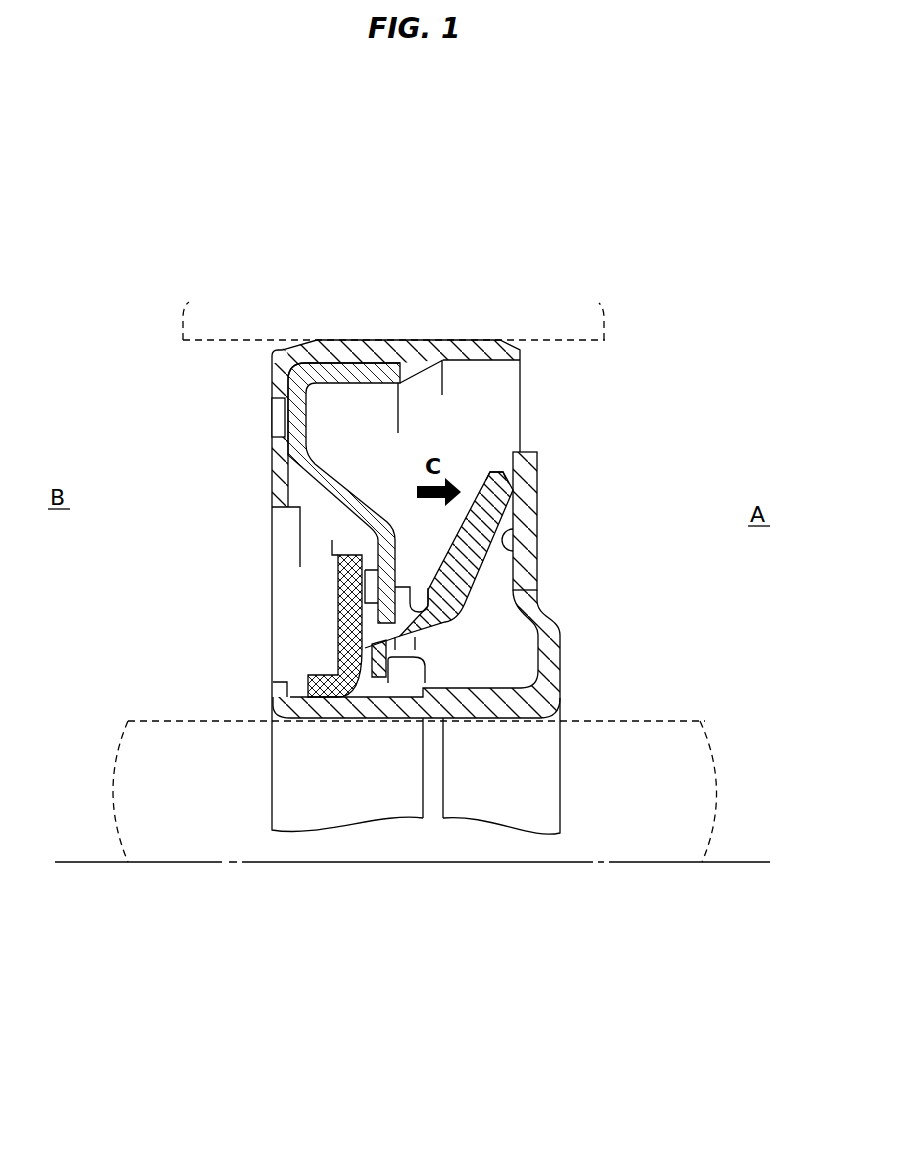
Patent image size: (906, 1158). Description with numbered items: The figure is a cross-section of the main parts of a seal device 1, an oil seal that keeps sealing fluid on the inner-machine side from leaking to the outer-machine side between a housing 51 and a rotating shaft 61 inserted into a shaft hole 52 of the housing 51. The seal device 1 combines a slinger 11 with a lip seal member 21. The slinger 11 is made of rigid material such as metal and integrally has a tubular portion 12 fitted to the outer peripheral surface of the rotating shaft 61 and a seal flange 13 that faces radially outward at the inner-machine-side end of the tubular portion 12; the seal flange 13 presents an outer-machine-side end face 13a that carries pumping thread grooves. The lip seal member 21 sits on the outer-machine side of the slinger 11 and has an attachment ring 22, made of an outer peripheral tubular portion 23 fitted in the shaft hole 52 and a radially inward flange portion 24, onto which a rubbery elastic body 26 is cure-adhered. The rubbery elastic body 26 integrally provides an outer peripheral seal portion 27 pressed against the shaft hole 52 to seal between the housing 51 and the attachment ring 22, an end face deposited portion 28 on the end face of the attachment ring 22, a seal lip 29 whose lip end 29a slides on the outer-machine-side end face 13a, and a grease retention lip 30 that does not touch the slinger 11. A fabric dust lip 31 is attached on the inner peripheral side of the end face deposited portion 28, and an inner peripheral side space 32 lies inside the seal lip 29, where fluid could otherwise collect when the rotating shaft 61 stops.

The seal device 1 is at (283, 352).
The slinger 11 is at (575, 662).
The tubular portion 12 is at (332, 705).
The seal flange 13 is at (535, 460).
The outer-machine-side end face 13a is at (513, 548).
The lip seal member 21 is at (262, 392).
The attachment ring 22 is at (297, 423).
The outer peripheral tubular portion 23 is at (450, 357).
The flange portion 24 is at (325, 590).
The rubbery elastic body 26 is at (310, 512).
The outer peripheral seal portion 27 is at (342, 357).
The end face deposited portion 28 is at (282, 472).
The seal lip 29 is at (478, 583).
The lip end 29a is at (536, 490).
The grease retention lip 30 is at (402, 683).
The dust lip 31 is at (313, 638).
The inner peripheral side space 32 is at (497, 623).
The housing 51 is at (553, 312).
The shaft hole 52 is at (587, 365).
The rotating shaft 61 is at (617, 848).